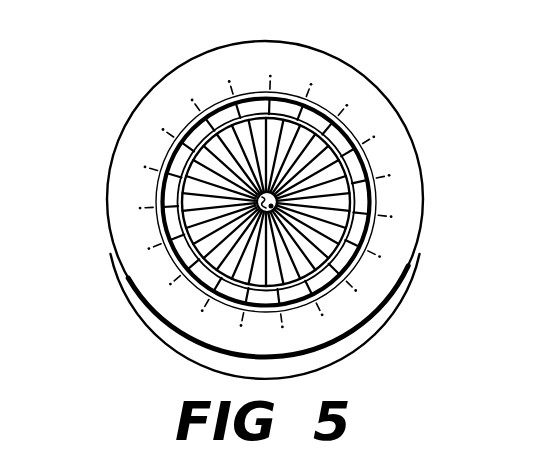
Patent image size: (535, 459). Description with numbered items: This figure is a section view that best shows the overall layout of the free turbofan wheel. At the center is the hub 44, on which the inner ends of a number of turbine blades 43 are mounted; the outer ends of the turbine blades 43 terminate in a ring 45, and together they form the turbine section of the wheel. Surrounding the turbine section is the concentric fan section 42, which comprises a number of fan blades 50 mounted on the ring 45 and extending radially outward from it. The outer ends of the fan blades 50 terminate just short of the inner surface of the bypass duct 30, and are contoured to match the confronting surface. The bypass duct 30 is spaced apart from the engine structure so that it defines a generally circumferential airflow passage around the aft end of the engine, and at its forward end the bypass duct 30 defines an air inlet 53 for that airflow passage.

The bypass duct 30 is at (387, 123).
The fan section 42 is at (312, 98).
The turbine blades 43 is at (165, 241).
The hub 44 is at (256, 201).
The ring 45 is at (362, 153).
The fan blades 50 is at (213, 113).
The air inlet 53 is at (383, 229).